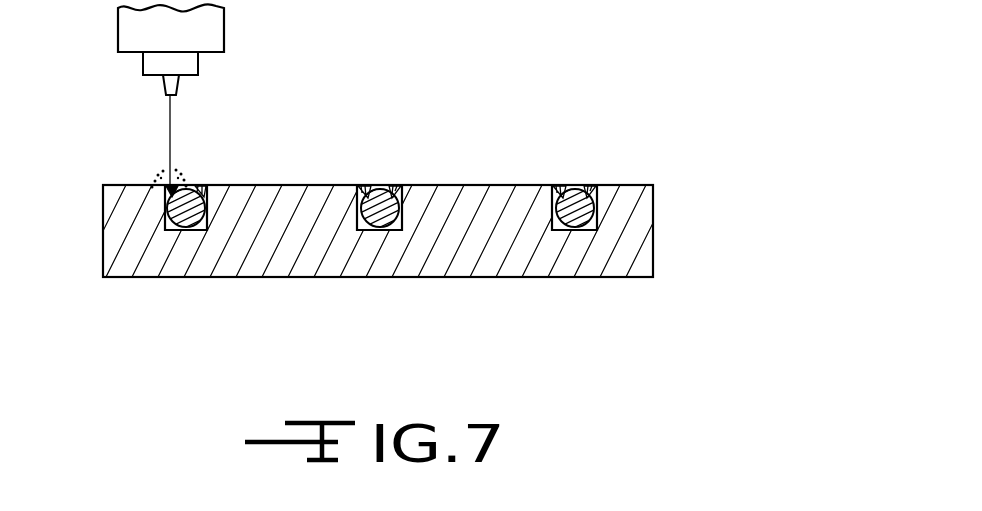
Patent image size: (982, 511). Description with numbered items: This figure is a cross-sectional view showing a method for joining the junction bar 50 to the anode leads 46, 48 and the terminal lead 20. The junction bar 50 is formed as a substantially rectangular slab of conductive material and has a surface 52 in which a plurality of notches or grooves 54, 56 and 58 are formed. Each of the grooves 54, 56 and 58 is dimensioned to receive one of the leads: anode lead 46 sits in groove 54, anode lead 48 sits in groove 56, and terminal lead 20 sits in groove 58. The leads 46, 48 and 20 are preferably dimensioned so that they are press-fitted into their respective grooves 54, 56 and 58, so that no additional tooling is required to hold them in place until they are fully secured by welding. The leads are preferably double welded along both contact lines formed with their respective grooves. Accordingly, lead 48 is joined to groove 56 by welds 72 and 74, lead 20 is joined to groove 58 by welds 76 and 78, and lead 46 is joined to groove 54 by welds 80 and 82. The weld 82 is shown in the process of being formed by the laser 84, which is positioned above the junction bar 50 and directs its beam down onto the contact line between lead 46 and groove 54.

The terminal lead 20 is at (378, 190).
The anode lead 46 is at (185, 191).
The anode lead 48 is at (575, 188).
The junction bar 50 is at (387, 171).
The surface 52 is at (122, 183).
The groove 54 is at (187, 230).
The groove 56 is at (575, 230).
The groove 58 is at (378, 230).
The weld 72 is at (588, 185).
The weld 74 is at (557, 185).
The weld 76 is at (395, 183).
The weld 78 is at (365, 183).
The weld 80 is at (203, 185).
The weld 82 is at (163, 178).
The laser 84 is at (224, 25).